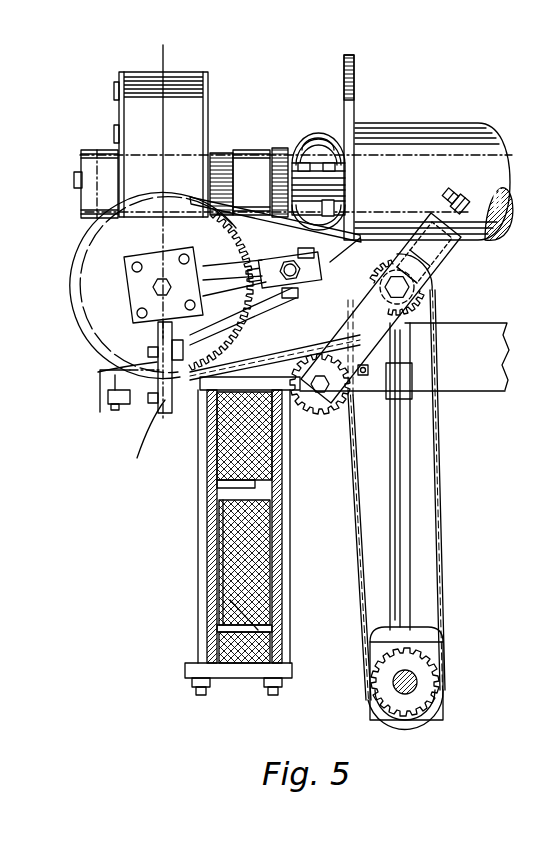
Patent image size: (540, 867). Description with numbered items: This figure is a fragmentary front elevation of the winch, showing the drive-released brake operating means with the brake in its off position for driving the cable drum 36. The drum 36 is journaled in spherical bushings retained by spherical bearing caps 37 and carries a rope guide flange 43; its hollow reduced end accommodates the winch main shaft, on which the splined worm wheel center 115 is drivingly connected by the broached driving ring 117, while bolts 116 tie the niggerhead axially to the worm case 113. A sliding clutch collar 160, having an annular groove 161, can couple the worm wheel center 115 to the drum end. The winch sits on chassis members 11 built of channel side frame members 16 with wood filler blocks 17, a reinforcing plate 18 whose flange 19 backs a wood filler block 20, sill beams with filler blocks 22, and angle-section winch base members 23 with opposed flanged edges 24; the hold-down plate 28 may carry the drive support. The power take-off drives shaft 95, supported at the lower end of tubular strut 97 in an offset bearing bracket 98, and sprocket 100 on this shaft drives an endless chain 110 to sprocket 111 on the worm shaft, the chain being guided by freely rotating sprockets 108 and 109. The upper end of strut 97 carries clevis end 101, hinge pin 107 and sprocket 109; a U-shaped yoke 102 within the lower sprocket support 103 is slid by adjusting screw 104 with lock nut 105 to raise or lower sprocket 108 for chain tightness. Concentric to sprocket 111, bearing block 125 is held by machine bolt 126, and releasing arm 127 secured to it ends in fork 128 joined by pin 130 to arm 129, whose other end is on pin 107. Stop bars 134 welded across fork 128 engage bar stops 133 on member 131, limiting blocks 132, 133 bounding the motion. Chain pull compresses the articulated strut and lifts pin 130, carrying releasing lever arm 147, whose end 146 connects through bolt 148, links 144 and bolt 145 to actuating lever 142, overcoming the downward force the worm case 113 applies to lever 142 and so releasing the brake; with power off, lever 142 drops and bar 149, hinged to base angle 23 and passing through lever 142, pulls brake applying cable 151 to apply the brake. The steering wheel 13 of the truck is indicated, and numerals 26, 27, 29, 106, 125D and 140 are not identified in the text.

The chassis member 11 is at (206, 585).
The steering wheel 13 is at (92, 448).
The side frame member 16 is at (206, 528).
The wood filler block 17 is at (262, 548).
The reinforcing plate 18 is at (210, 622).
The inwardly extending flange 19 is at (246, 666).
The wood filler and reinforcing block 20 is at (252, 652).
The reinforcing wood filler block 22 is at (206, 486).
The winch base member 23 is at (485, 393).
The flanged edge 24 is at (487, 323).
The side wall 26 is at (278, 592).
The bolt 27 is at (200, 697).
The hold-down plate 28 is at (186, 672).
The nut 29 is at (286, 682).
The cable drum 36 is at (480, 125).
The spherical bearing cap 37 is at (333, 140).
The rope guide flange 43 is at (356, 72).
The shaft 95 is at (418, 668).
The tubular strut 97 is at (412, 577).
The offset bearing bracket 98 is at (428, 722).
The sprocket 100 is at (372, 692).
The clevis end 101 is at (412, 347).
The U-shaped yoke 102 is at (444, 260).
The lower sprocket support 103 is at (398, 372).
The adjusting screw 104 is at (462, 197).
The lock nut 105 is at (500, 236).
The gear 106 is at (330, 414).
The hinge pin 107 is at (412, 287).
The lower sprocket 108 is at (312, 412).
The sprocket 109 is at (424, 300).
The endless chain 110 is at (441, 492).
The sprocket 111 is at (76, 236).
The worm case 113 is at (172, 78).
The splined worm wheel center 115 is at (226, 150).
The bolt 116 is at (74, 180).
The broached driving ring 117 is at (81, 158).
The bearing block 125 is at (130, 300).
The holes 125D is at (152, 246).
The machine bolt 126 is at (153, 287).
The releasing arm 127 is at (206, 264).
The fork 128 is at (278, 259).
The arm 129 is at (336, 262).
The pin 130 is at (300, 300).
The member 131 is at (381, 308).
The limiting block 132 is at (292, 200).
The bar stop 133 is at (298, 295).
The stop bar 134 is at (262, 300).
The bearing housing 140 is at (320, 142).
The actuating lever 142 is at (127, 440).
The link 144 is at (158, 398).
The bolt 145 is at (174, 400).
The end of releasing lever arm 146 is at (100, 371).
The releasing lever arm 147 is at (240, 300).
The bolt 148 is at (158, 343).
The bar 149 is at (366, 500).
The brake applying cable 151 is at (100, 394).
The sliding clutch collar 160 is at (252, 150).
The annular groove 161 is at (281, 148).